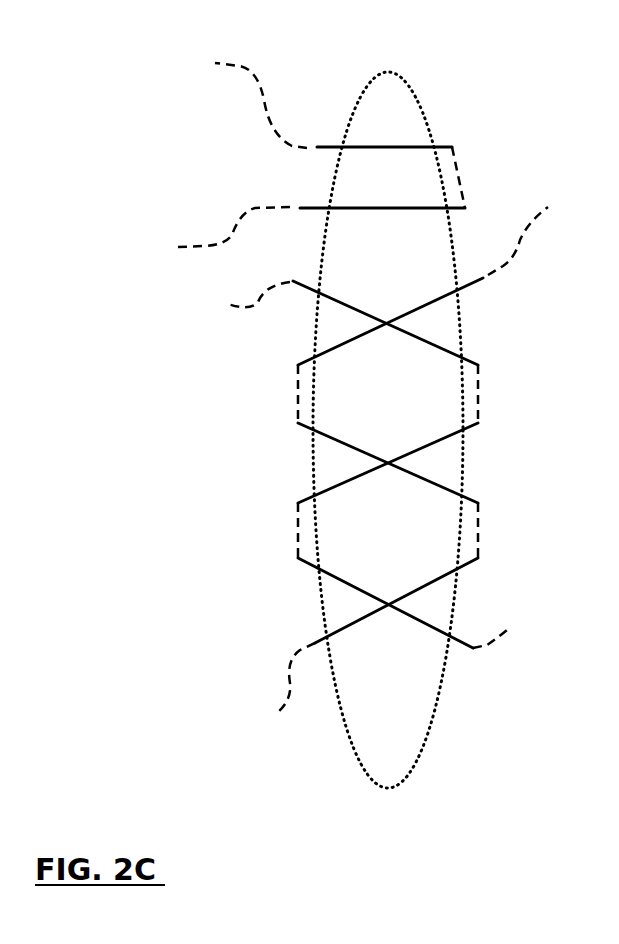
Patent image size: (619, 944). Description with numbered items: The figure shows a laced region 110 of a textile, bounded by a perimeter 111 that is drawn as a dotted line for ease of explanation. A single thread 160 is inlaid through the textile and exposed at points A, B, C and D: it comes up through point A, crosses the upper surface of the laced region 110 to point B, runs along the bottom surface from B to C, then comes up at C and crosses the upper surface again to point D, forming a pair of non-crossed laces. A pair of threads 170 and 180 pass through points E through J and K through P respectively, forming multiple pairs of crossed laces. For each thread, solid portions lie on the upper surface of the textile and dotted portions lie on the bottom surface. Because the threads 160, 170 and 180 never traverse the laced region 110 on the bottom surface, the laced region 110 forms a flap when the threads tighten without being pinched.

The laced region 110 is at (533, 117).
The perimeter 111 is at (432, 727).
The thread 160 is at (272, 117).
The thread 170 is at (238, 310).
The thread 180 is at (512, 260).